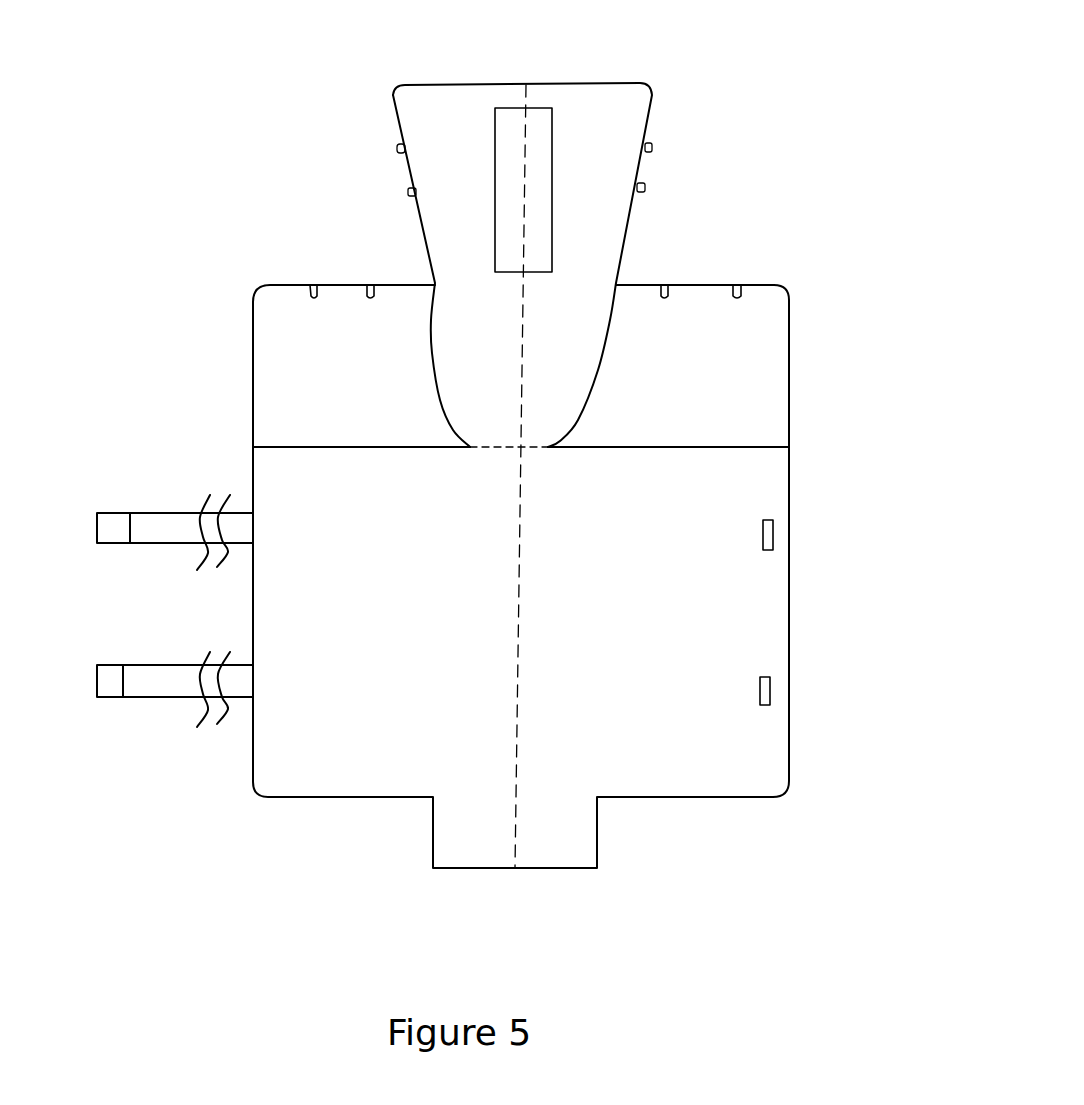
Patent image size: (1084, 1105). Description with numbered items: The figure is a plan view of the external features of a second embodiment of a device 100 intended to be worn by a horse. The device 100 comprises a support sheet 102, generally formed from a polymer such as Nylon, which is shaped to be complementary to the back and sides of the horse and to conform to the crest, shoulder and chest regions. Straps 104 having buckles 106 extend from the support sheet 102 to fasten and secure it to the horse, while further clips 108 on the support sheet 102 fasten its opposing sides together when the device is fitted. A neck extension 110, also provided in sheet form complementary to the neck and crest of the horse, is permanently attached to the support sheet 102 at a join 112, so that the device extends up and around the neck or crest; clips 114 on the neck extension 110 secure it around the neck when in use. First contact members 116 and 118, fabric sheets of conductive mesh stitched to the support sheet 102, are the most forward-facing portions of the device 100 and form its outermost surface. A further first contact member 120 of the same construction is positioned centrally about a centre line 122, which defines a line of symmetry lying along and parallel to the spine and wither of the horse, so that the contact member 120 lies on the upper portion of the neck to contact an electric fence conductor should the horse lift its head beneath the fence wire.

The device 100 is at (242, 898).
The support sheet 102 is at (638, 723).
The straps 104 is at (163, 725).
The buckles 106 is at (815, 680).
The clips 108 is at (736, 285).
The neck extension 110 is at (598, 240).
The join 112 is at (538, 450).
The clips 114 is at (652, 147).
The first contact member 116 is at (730, 402).
The first contact member 118 is at (350, 394).
The first contact member 120 is at (520, 155).
The centre line 122 is at (515, 843).